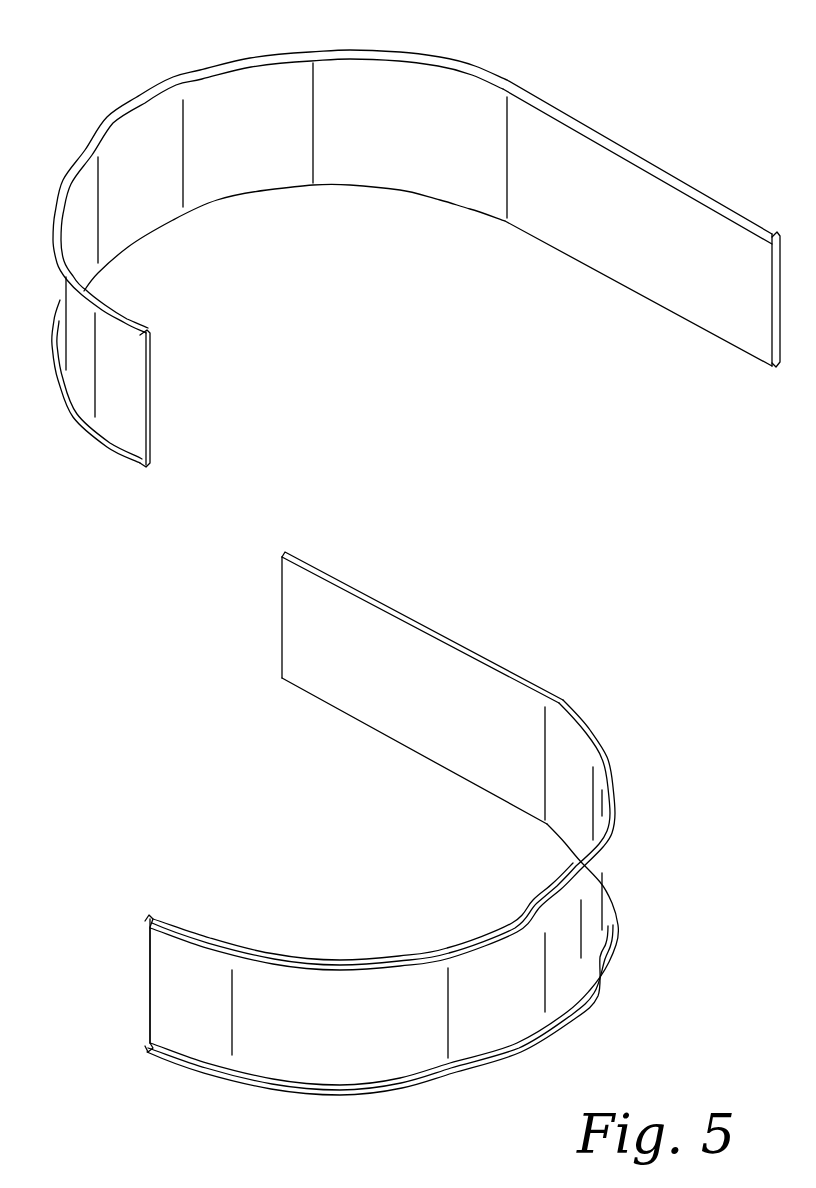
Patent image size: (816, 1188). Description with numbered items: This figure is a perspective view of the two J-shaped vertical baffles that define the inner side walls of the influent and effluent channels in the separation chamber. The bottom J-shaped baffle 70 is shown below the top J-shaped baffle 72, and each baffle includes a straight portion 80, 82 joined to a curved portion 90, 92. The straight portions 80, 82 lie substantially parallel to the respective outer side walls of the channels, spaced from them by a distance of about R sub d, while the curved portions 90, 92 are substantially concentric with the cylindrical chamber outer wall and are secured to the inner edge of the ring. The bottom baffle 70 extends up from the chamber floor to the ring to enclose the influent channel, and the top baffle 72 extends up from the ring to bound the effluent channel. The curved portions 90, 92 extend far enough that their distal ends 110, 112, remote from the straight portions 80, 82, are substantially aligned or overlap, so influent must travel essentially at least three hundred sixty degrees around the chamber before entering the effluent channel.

The bottom J-shaped vertical baffle 70 is at (570, 701).
The top J-shaped vertical baffle 72 is at (466, 61).
The straight portion 80 is at (407, 696).
The straight portion 82 is at (626, 223).
The curved portion 90 is at (359, 1035).
The curved portion 92 is at (251, 153).
The end 110 is at (150, 988).
The end 112 is at (150, 400).